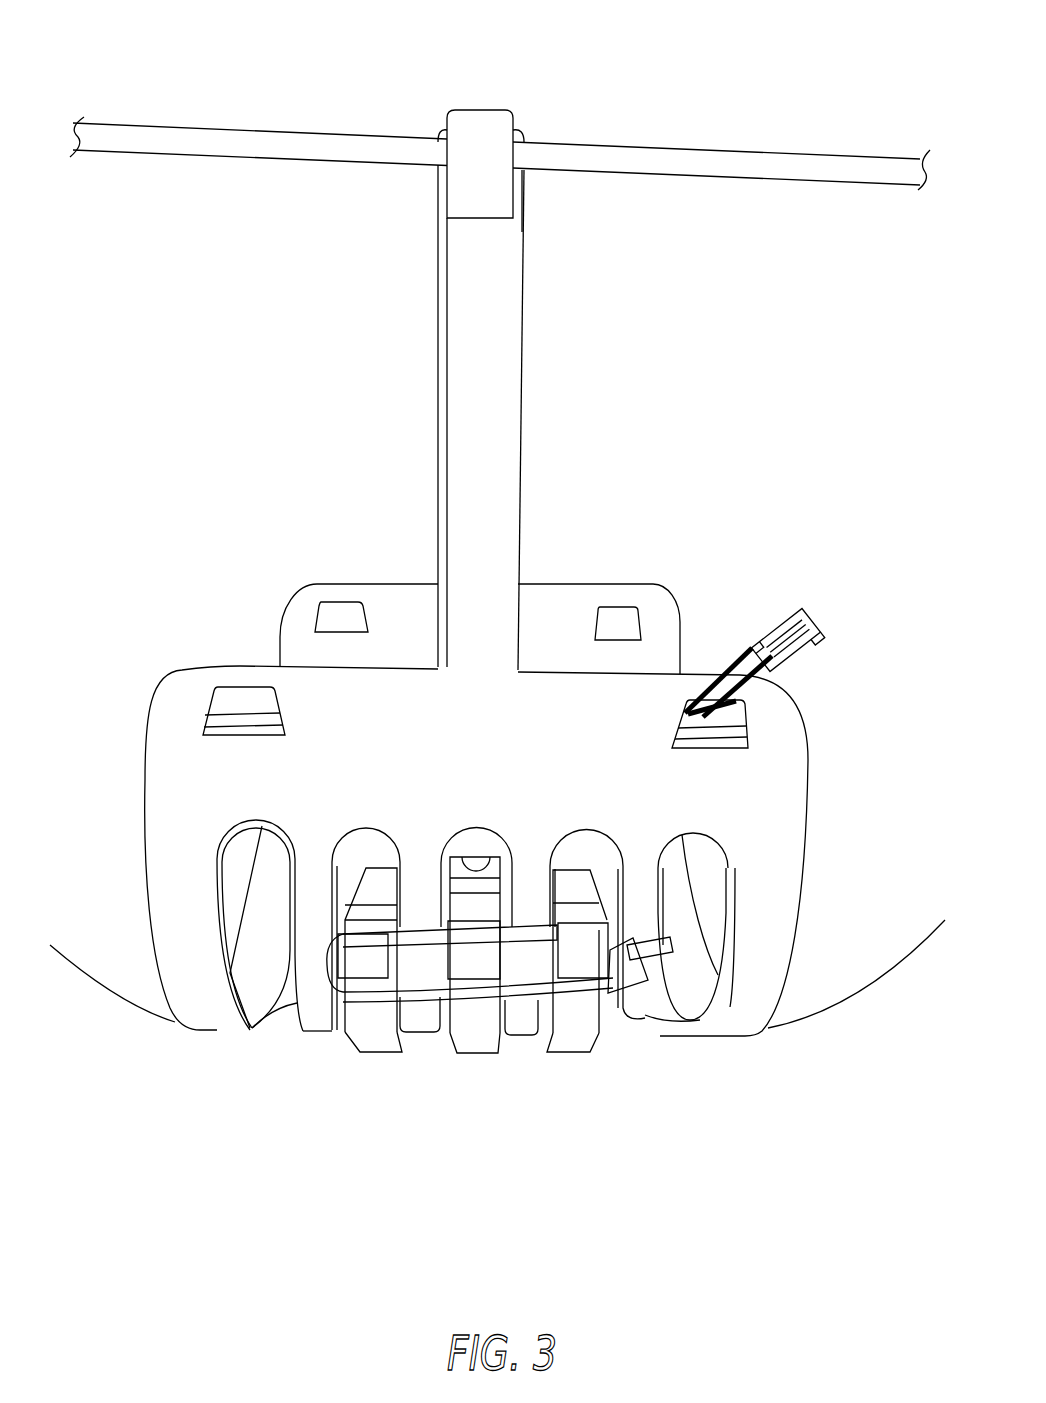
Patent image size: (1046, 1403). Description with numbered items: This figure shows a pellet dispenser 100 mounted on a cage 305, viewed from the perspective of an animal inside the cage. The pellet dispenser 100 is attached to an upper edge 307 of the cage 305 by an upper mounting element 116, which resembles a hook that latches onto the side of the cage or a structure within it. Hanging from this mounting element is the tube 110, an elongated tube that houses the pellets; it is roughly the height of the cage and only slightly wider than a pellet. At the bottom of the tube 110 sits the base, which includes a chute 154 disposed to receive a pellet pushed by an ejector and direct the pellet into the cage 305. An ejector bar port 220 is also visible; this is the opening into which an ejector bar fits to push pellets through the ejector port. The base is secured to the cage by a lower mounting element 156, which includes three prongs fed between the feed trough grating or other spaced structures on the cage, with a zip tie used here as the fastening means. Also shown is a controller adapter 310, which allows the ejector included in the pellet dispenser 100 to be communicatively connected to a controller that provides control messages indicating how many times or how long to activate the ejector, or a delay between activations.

The pellet dispenser 100 is at (480, 110).
The tube 110 is at (519, 505).
The upper mounting element 116 is at (507, 210).
The chute 154 is at (468, 907).
The lower mounting element 156 is at (363, 957).
The ejector bar port 220 is at (480, 862).
The cage 305 is at (838, 78).
The upper edge 307 is at (645, 151).
The controller adapter 310 is at (828, 641).